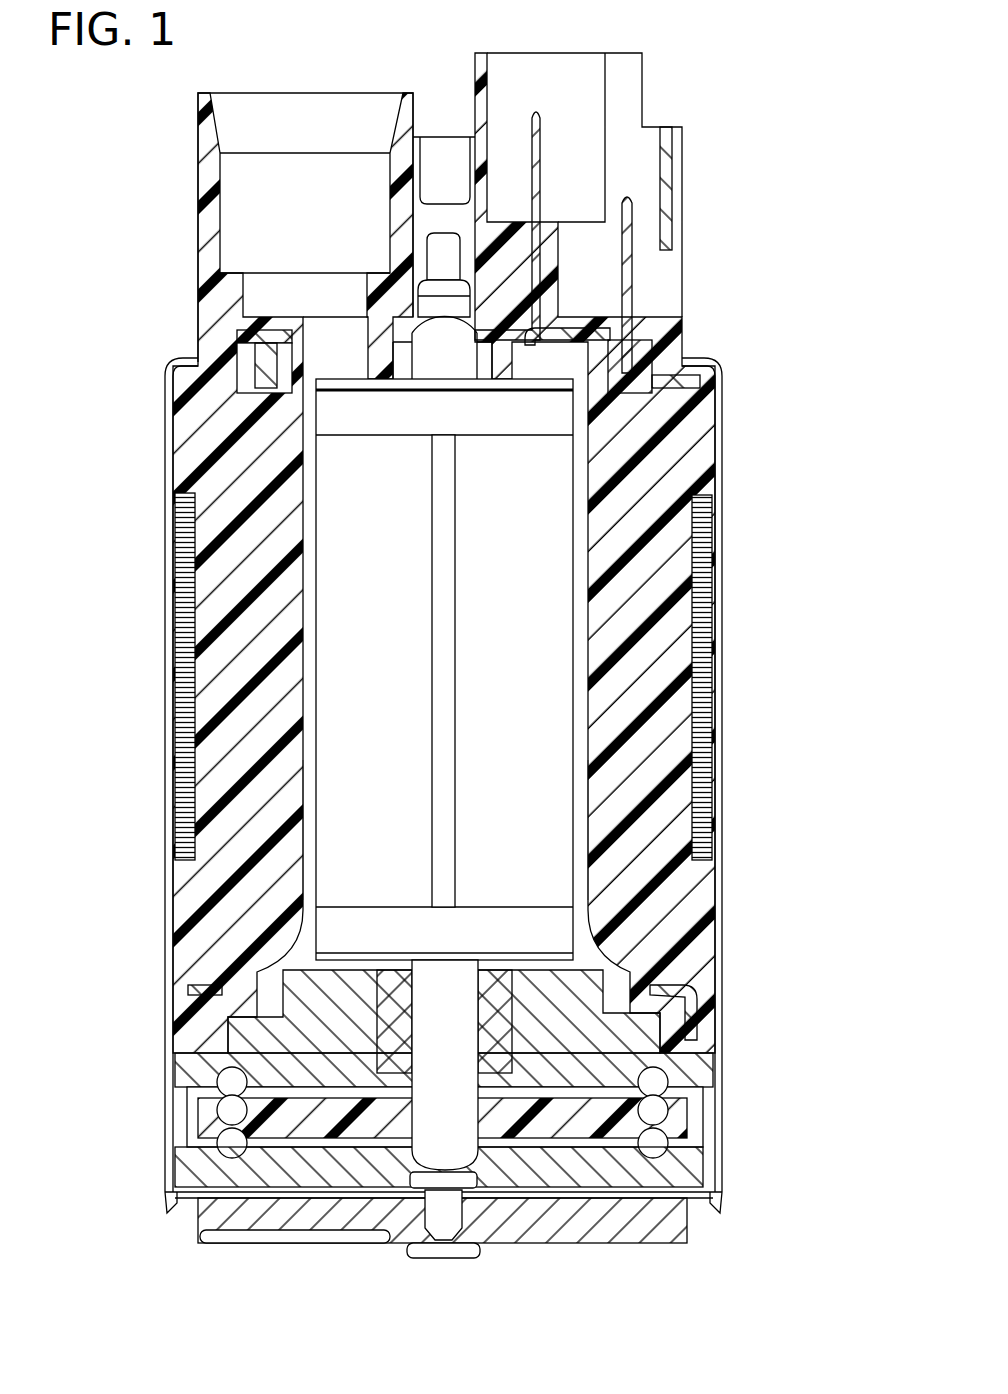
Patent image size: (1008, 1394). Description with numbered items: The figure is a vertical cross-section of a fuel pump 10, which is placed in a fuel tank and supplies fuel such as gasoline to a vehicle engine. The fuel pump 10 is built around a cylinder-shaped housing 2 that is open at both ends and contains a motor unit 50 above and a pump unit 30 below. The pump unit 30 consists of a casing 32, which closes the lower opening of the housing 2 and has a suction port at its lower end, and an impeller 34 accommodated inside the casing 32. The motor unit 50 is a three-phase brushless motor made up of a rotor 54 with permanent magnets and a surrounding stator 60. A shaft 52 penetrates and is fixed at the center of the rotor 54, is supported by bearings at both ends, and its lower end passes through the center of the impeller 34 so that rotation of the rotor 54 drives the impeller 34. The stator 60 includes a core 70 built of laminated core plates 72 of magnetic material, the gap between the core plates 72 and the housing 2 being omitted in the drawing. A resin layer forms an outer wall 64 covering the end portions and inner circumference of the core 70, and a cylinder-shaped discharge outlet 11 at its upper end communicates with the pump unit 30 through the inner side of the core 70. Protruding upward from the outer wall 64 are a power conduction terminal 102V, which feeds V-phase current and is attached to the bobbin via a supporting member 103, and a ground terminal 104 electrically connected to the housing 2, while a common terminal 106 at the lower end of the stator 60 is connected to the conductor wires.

The fuel pump 10 is at (795, 69).
The discharge outlet 11 is at (204, 152).
The ground terminal 104 is at (538, 183).
The power conduction terminal 102V is at (628, 241).
The supporting member 103 is at (643, 353).
The stator 60 is at (702, 434).
The motor unit 50 is at (735, 502).
The housing 2 is at (720, 554).
The core 70 is at (702, 621).
The core plates 72 is at (702, 666).
The outer wall 64 is at (680, 801).
The rotor 54 is at (550, 801).
The shaft 52 is at (457, 1002).
The common terminal 106 is at (690, 994).
The pump unit 30 is at (735, 1074).
The casing 32 is at (700, 1079).
The impeller 34 is at (605, 1131).